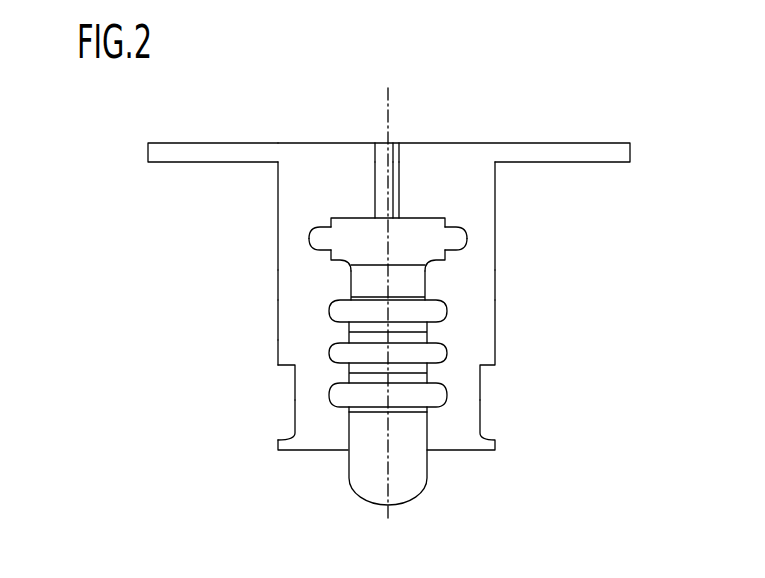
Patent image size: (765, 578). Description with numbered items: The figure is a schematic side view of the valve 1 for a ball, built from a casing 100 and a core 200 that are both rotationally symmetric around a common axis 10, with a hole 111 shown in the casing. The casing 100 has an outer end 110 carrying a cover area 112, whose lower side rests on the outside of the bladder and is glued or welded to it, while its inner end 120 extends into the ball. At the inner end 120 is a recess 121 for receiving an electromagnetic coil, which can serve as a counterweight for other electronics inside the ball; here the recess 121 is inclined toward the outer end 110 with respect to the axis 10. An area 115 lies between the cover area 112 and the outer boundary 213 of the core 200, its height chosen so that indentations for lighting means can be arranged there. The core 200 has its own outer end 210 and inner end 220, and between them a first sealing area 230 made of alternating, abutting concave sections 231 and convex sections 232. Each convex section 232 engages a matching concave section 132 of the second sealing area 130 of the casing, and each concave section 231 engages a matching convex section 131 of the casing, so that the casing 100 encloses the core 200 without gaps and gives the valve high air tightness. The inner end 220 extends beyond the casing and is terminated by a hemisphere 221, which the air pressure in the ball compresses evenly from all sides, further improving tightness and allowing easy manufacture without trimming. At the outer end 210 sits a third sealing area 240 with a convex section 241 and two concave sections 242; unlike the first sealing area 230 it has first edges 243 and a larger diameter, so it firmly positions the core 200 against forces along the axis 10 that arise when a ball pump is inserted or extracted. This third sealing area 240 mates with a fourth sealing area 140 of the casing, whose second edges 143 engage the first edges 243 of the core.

The valve 1 is at (556, 98).
The axis 10 is at (391, 107).
The casing 100 is at (297, 141).
The hole 111 is at (385, 146).
The cover area 112 is at (149, 151).
The outer end of casing 110 is at (153, 208).
The area 115 is at (266, 195).
The fourth sealing area 140 is at (228, 267).
The second edges 143 is at (332, 263).
The second sealing area 130 is at (227, 362).
The concave section of casing 132 is at (329, 355).
The convex section of casing 131 is at (348, 373).
The inner end of casing 120 is at (180, 427).
The recess 121 is at (293, 400).
The core 200 is at (366, 493).
The outer end of core 210 is at (553, 247).
The outer boundary of core 213 is at (423, 217).
The concave sections of third sealing area 242 is at (447, 227).
The convex section of third sealing area 241 is at (466, 238).
The first edges 243 is at (445, 258).
The third sealing area 240 is at (553, 270).
The convex section of core 232 is at (447, 312).
The concave section of core 231 is at (427, 333).
The first sealing area 230 is at (553, 352).
The inner end of core 220 is at (553, 455).
The hemisphere 221 is at (410, 476).